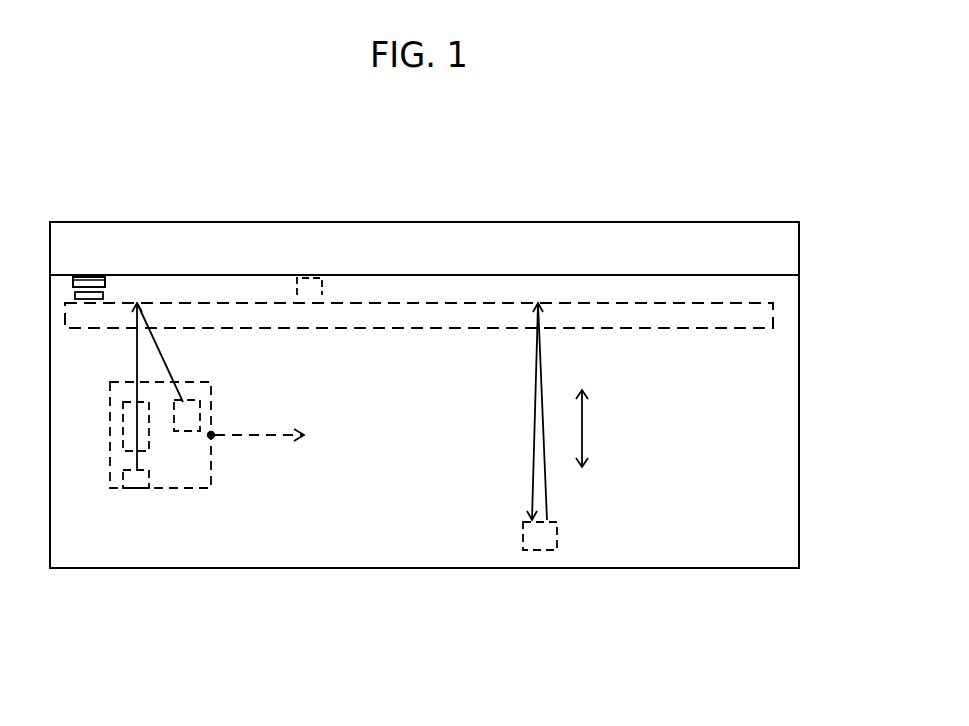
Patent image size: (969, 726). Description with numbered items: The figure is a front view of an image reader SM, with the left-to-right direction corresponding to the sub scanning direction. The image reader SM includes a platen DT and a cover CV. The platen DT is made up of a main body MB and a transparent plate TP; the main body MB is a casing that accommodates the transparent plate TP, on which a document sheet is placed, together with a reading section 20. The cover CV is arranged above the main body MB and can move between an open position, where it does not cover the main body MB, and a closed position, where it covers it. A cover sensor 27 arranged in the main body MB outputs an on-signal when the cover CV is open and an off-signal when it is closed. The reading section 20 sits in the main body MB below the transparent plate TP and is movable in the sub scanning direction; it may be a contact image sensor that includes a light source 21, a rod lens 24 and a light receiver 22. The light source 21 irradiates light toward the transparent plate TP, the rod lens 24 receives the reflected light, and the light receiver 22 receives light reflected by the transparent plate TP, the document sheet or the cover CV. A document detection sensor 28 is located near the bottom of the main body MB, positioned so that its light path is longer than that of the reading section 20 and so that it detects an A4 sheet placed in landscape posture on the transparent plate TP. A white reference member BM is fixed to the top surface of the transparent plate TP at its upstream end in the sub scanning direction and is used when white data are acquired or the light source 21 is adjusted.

The reading section 20 is at (187, 505).
The light source 21 is at (188, 414).
The light receiver 22 is at (145, 480).
The rod lens 24 is at (132, 418).
The cover sensor 27 is at (310, 278).
The document detection sensor 28 is at (535, 543).
The image reader SM is at (559, 179).
The cover CV is at (775, 250).
The reference member BM is at (108, 288).
The transparent plate TP is at (655, 313).
The main body MB is at (799, 510).
The platen DT is at (845, 645).